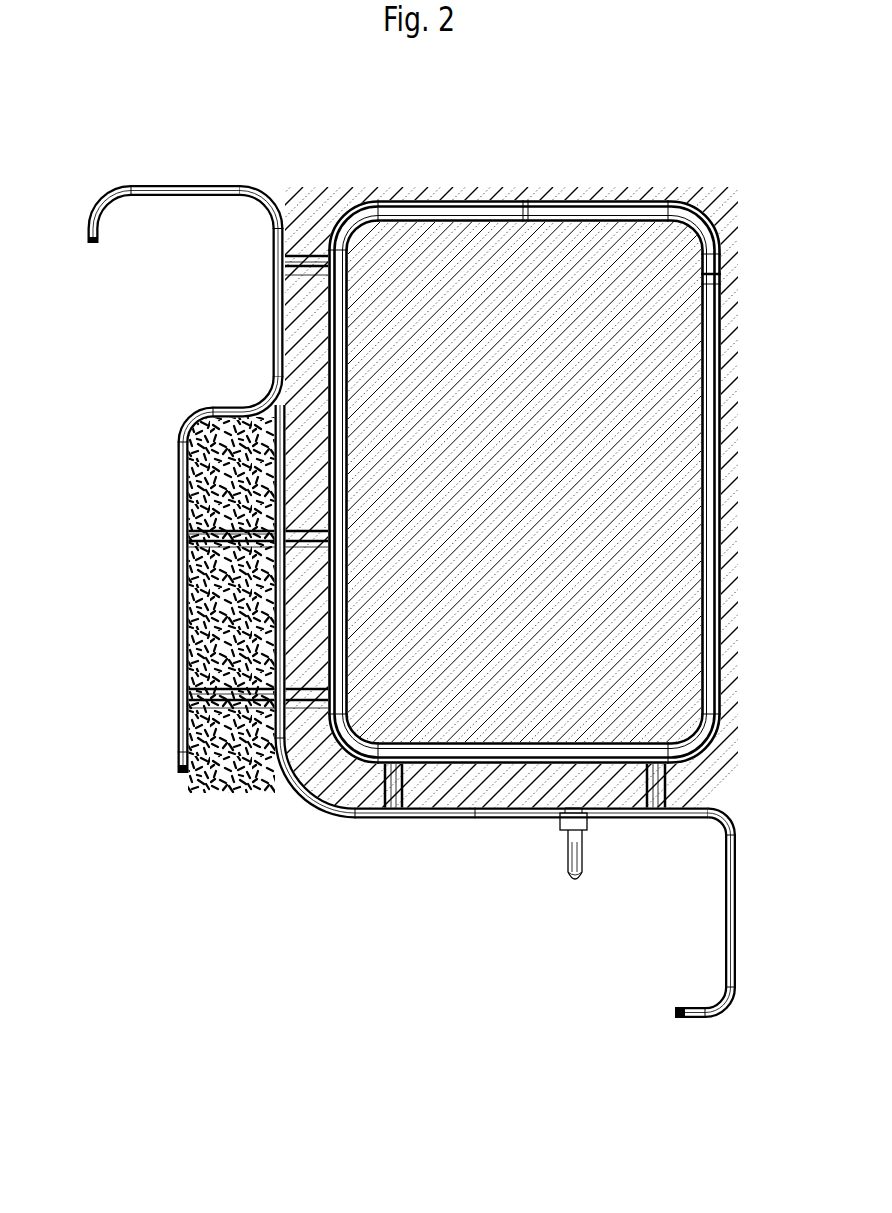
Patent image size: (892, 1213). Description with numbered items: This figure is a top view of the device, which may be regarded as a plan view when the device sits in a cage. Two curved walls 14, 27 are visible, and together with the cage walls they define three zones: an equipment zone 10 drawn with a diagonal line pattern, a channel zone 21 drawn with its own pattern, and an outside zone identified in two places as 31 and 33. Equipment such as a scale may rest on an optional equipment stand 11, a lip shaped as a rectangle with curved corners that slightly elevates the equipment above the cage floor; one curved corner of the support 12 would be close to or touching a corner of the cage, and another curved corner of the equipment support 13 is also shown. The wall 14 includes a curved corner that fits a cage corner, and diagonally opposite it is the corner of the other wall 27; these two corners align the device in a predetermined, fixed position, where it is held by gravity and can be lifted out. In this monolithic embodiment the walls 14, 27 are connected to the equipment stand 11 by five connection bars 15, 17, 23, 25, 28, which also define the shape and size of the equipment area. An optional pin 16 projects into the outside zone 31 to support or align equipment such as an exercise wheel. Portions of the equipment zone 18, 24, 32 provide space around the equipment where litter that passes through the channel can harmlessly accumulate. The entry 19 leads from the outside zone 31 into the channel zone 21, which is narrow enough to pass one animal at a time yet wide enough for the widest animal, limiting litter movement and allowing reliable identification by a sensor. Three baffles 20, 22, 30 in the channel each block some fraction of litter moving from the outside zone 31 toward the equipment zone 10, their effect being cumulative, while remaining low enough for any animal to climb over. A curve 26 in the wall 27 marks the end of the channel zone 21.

The equipment zone 10 is at (540, 470).
The equipment stand 11 is at (473, 210).
The curved corner of the support 12 is at (700, 212).
The curved corner of the equipment support 13 is at (700, 728).
The wall 14 is at (720, 1012).
The connection bar 15 is at (650, 785).
The pin 16 is at (573, 838).
The connection bar 17 is at (395, 785).
The portion of the equipment zone 18 is at (318, 757).
The entry to the channel zone 19 is at (222, 793).
The baffle 20 is at (223, 692).
The channel zone 21 is at (240, 620).
The baffle 22 is at (203, 553).
The connection bar 23 is at (310, 690).
The portion of the equipment zone 24 is at (298, 618).
The connection bar 25 is at (310, 547).
The curve in wall 26 is at (193, 417).
The wall 27 is at (102, 193).
The connection bar 28 is at (305, 258).
The baffle 30 is at (270, 407).
The outside zone 31 is at (420, 967).
The portion of the equipment zone 32 is at (498, 780).
The outside zone 33 is at (182, 283).